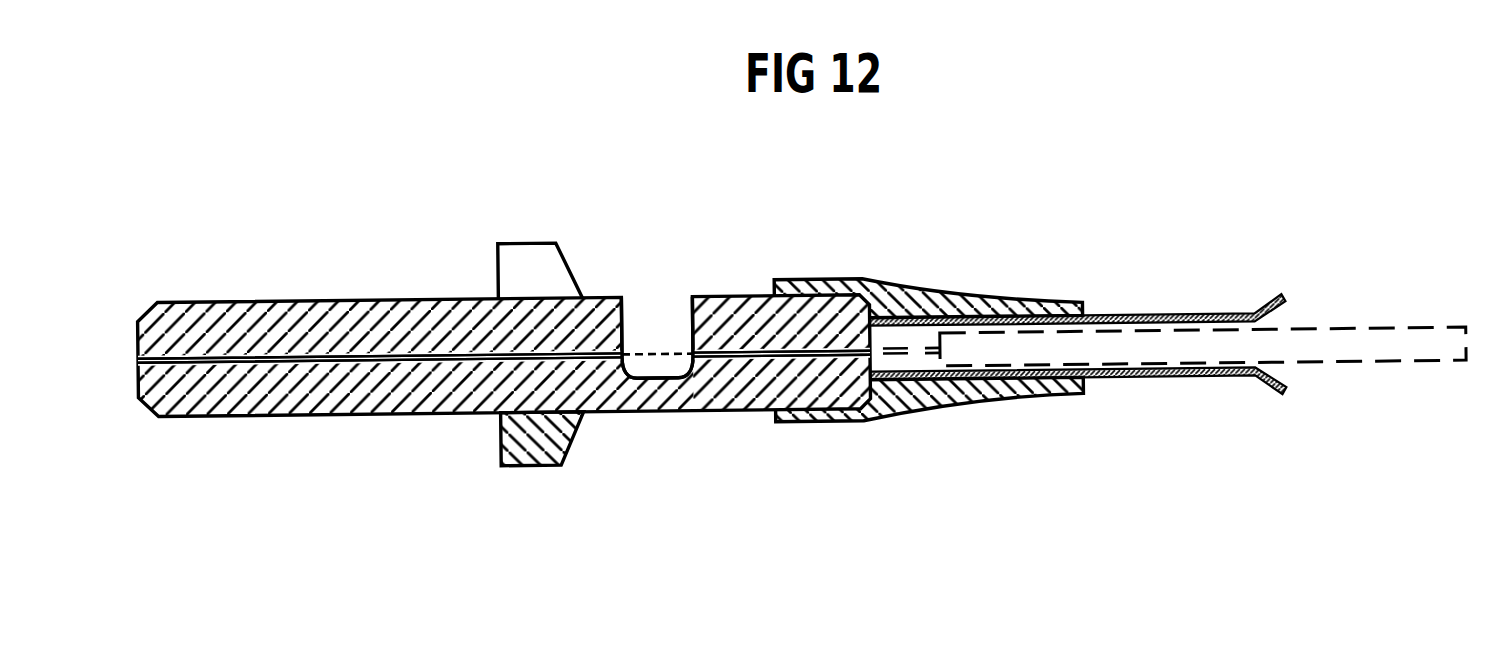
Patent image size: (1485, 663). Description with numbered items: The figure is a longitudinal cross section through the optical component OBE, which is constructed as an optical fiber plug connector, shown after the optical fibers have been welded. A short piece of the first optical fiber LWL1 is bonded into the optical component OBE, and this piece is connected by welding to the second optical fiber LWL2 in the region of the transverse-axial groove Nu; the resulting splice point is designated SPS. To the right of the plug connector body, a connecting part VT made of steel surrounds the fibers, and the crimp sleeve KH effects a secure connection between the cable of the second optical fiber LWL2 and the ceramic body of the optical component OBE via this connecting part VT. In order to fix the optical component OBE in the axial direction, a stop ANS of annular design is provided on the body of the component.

The optical component OBE is at (542, 233).
The stop ANS is at (523, 452).
The splice point SPS is at (652, 313).
The transverse-axial groove Nu is at (667, 310).
The first optical fiber LWL1 is at (630, 364).
The second optical fiber LWL2 is at (678, 366).
The connecting part VT is at (936, 291).
The crimp sleeve KH is at (1148, 310).